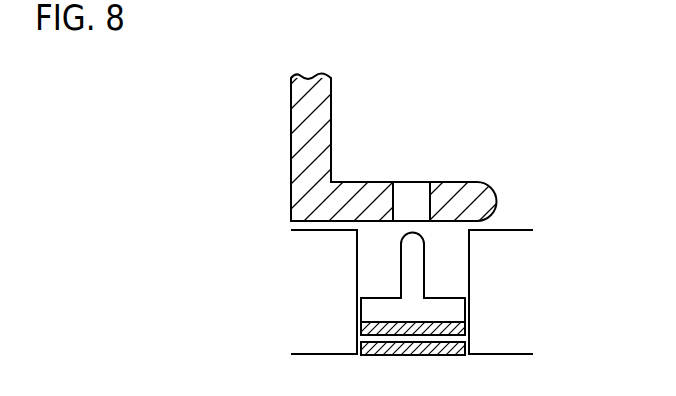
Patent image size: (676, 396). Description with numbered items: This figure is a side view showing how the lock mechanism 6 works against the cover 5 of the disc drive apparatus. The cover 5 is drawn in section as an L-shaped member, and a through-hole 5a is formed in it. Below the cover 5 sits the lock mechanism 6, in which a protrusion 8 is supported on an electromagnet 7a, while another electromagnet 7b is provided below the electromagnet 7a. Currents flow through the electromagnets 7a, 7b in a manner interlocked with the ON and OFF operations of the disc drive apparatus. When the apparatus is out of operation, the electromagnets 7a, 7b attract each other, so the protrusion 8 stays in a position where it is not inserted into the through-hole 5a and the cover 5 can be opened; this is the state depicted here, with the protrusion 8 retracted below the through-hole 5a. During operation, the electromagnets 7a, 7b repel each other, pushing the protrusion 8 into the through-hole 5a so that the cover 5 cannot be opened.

The cover 5 is at (291, 108).
The through-hole 5a is at (427, 202).
The lock mechanism 6 is at (515, 205).
The electromagnet 7a is at (460, 328).
The electromagnet 7b is at (462, 347).
The protrusion 8 is at (413, 256).